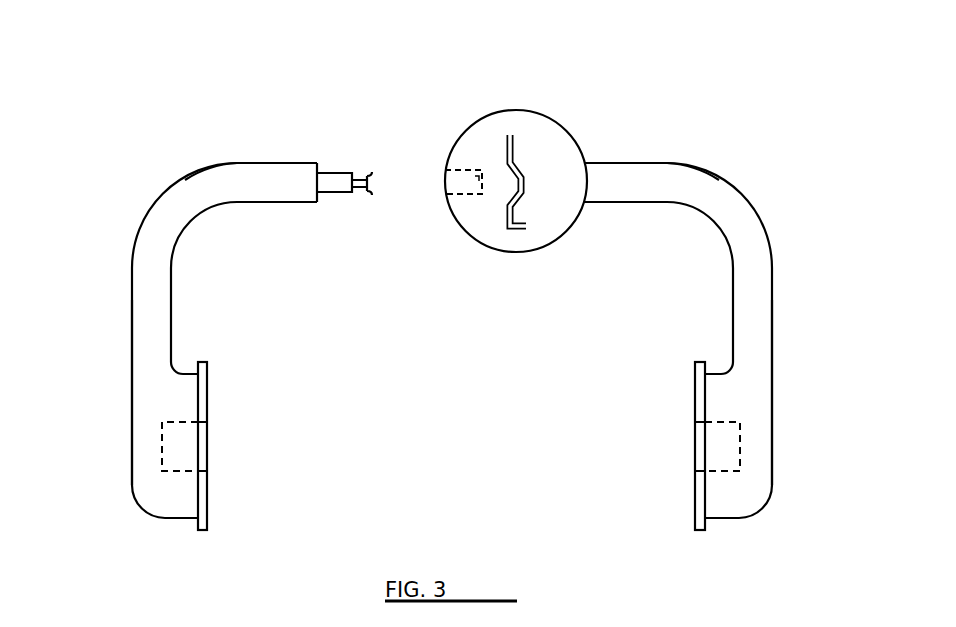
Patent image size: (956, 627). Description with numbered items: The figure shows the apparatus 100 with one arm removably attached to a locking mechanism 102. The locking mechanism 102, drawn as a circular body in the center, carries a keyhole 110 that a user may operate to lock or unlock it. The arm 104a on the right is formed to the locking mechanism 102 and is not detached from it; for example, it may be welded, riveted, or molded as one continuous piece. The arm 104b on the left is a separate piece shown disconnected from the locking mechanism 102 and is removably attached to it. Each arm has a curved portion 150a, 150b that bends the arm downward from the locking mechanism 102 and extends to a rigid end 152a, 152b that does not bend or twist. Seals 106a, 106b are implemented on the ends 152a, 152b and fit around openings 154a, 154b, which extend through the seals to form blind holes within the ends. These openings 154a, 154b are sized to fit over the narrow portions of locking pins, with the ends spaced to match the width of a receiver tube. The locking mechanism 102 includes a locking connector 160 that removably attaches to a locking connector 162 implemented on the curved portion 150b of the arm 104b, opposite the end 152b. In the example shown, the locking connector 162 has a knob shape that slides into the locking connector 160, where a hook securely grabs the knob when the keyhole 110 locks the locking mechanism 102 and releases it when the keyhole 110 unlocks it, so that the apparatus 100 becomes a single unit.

The apparatus 100 is at (345, 66).
The locking mechanism 102 is at (560, 142).
The arm 104a is at (690, 176).
The arm 104b is at (225, 177).
The seal 106a is at (699, 362).
The seal 106b is at (204, 362).
The keyhole 110 is at (507, 135).
The curved portion 150a is at (745, 228).
The curved portion 150b is at (156, 220).
The end portion 152a is at (758, 380).
The end portion 152b is at (148, 382).
The opening 154a is at (725, 445).
The opening 154b is at (178, 446).
The locking connector 160 is at (448, 183).
The locking connector 162 is at (333, 176).